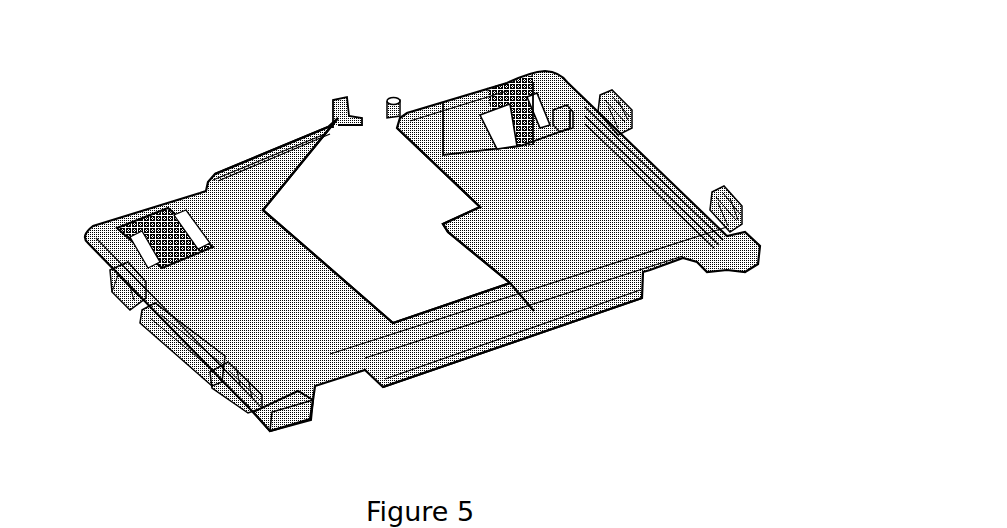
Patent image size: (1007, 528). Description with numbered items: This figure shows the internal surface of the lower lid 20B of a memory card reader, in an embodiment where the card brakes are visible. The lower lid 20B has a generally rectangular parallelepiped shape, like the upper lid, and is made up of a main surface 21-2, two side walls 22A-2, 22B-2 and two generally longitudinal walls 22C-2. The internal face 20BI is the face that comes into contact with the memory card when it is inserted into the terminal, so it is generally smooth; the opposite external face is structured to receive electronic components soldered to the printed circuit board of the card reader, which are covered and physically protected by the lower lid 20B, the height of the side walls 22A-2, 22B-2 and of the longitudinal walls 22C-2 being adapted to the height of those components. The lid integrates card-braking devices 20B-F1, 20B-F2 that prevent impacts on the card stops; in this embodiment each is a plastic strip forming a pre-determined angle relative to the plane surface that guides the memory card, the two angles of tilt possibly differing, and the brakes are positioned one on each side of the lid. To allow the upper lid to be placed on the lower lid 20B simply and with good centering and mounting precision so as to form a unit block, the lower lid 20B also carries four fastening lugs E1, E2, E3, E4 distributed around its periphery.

The lower lid 20B is at (582, 358).
The main surface 21-2 is at (620, 188).
The side wall 22A-2 is at (157, 340).
The side wall 22B-2 is at (642, 137).
The longitudinal wall 22C-2 is at (247, 150).
The card-braking device 20B-F1 is at (137, 213).
The card-braking device 20B-F2 is at (497, 88).
The fastening lug E1 is at (220, 378).
The fastening lug E2 is at (117, 275).
The fastening lug E3 is at (615, 90).
The fastening lug E4 is at (735, 193).
The internal face 20BI is at (289, 338).